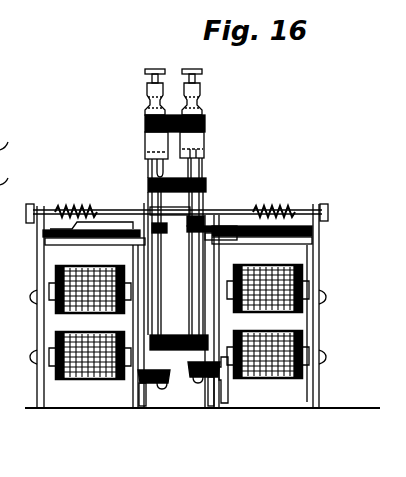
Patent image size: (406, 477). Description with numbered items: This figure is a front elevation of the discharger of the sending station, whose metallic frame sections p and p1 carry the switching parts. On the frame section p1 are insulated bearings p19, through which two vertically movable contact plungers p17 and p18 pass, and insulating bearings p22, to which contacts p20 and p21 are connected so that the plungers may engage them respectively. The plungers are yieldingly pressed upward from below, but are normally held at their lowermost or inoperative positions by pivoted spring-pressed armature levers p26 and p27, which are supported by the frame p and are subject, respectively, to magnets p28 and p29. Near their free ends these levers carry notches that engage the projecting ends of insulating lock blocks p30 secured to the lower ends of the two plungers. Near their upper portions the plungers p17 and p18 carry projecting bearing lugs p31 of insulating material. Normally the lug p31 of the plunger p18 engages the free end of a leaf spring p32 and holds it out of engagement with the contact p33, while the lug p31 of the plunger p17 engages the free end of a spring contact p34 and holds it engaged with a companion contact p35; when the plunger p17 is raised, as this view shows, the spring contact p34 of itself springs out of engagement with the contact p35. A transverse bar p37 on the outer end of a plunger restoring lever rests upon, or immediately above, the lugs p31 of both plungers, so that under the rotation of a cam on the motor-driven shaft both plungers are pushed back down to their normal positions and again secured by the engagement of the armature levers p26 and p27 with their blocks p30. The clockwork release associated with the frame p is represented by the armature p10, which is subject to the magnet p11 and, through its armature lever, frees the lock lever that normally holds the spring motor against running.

The metallic frame section p is at (43, 390).
The metallic frame section p1 is at (172, 143).
The armature p10 is at (0, 162).
The magnet p11 is at (0, 196).
The contact plunger p17 is at (201, 385).
The contact plunger p18 is at (165, 387).
The insulated bearings p19 is at (213, 178).
The contact p20 is at (200, 147).
The contact p21 is at (160, 153).
The insulating bearings p22 is at (205, 127).
The armature lever p26 is at (230, 408).
The armature lever p27 is at (140, 396).
The magnet p28 is at (268, 317).
The magnet p29 is at (92, 311).
The insulating lock blocks p30 is at (183, 382).
The bearing lugs p31 is at (152, 207).
The leaf spring p32 is at (128, 234).
The contact p33 is at (125, 233).
The spring contact p34 is at (210, 232).
The companion contact p35 is at (223, 240).
The transverse bar p37 is at (213, 215).